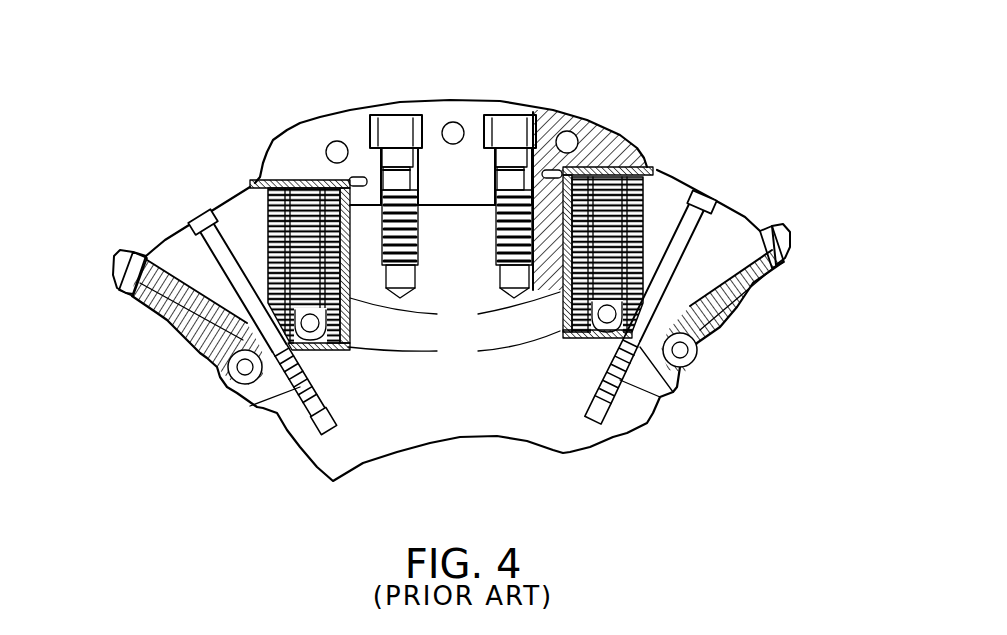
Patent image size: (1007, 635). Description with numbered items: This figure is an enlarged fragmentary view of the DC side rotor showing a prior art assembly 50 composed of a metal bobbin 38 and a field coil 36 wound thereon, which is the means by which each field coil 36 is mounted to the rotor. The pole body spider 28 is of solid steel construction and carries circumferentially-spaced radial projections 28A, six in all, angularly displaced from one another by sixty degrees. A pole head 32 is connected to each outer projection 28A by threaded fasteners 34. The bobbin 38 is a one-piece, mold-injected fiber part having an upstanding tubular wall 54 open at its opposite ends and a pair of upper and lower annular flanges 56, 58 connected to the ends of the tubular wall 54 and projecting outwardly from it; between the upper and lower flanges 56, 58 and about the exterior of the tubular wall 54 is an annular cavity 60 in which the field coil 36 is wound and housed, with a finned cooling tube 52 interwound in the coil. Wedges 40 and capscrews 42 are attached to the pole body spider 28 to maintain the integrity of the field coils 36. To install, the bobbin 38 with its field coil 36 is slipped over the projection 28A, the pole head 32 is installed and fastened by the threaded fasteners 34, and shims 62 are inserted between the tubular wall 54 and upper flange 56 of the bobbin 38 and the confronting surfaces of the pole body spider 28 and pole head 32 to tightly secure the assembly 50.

The pole body spider 28 is at (443, 413).
The radial projection 28A is at (450, 228).
The pole head 32 is at (472, 188).
The threaded fastener 34 is at (396, 113).
The field coil 36 is at (333, 278).
The bobbin 38 is at (280, 176).
The wedge 40 is at (180, 247).
The capscrew 42 is at (196, 213).
The assembly 50 is at (673, 132).
The finned cooling tube 52 is at (318, 357).
The tubular wall 54 is at (455, 314).
The upper annular flange 56 is at (320, 180).
The lower annular flange 58 is at (347, 368).
The annular cavity 60 is at (222, 245).
The shim 62 is at (344, 176).